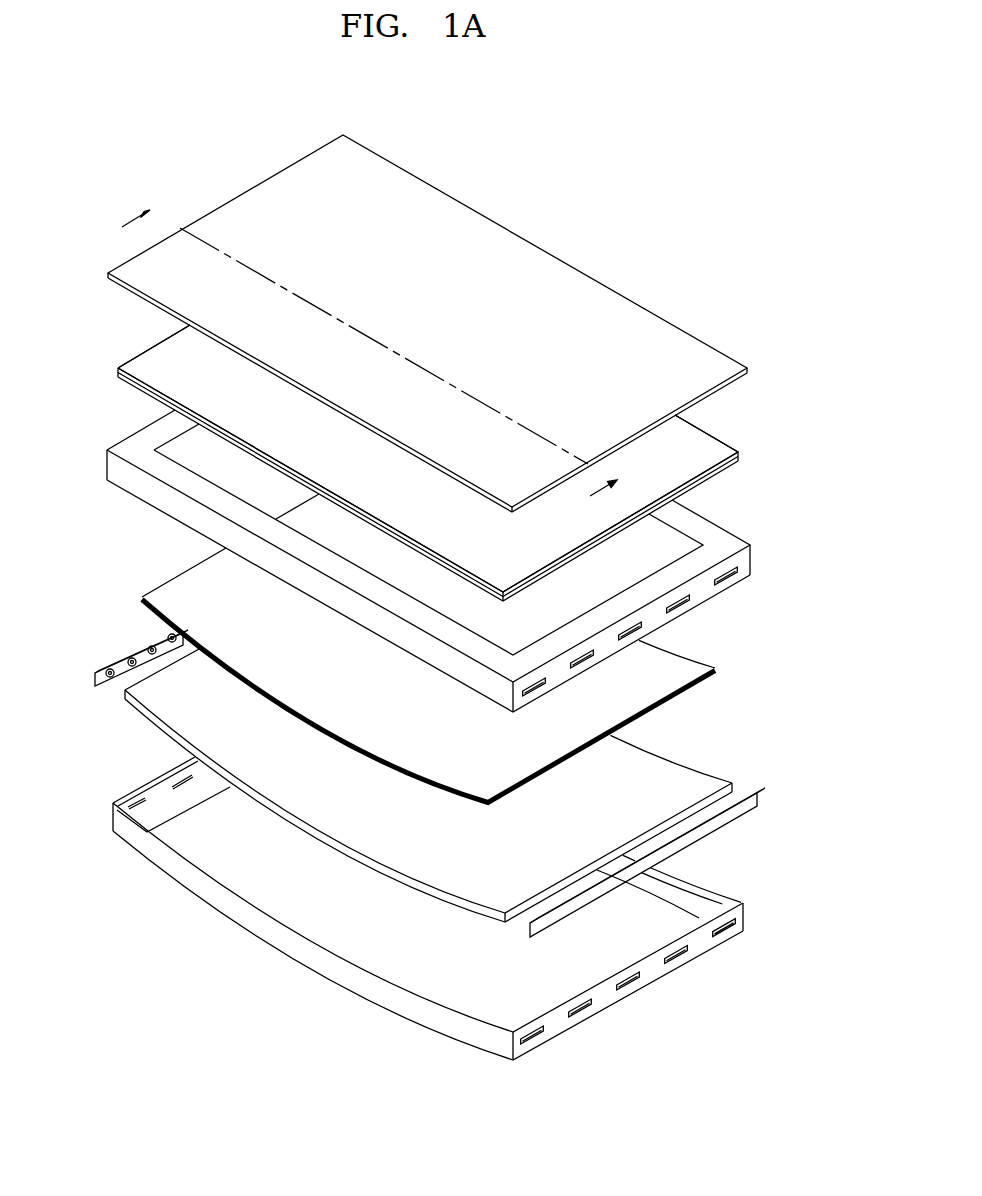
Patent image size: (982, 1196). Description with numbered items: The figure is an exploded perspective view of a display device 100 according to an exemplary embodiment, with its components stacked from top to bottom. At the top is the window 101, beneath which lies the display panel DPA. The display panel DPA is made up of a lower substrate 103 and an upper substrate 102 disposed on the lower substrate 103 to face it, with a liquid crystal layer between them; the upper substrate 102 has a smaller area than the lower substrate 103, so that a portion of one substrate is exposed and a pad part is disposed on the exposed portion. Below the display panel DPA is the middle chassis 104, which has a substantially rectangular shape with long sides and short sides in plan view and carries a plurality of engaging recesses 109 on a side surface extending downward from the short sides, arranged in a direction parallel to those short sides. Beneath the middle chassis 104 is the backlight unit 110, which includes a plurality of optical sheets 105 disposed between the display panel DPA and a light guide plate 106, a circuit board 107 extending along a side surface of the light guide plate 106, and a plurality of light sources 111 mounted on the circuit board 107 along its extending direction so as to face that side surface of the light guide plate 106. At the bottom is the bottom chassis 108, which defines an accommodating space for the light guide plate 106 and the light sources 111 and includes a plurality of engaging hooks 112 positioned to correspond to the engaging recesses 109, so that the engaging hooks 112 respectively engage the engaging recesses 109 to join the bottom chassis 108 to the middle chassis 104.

The display device 100 is at (573, 177).
The window 101 is at (702, 360).
The upper substrate 102 is at (152, 362).
The lower substrate 103 is at (125, 361).
The middle chassis 104 is at (693, 525).
The optical sheets 105 is at (172, 597).
The light guide plate 106 is at (138, 708).
The circuit board 107 is at (145, 640).
The bottom chassis 108 is at (653, 968).
The engaging recesses 109 is at (730, 581).
The backlight unit 110 is at (145, 515).
The light sources 111 is at (120, 662).
The engaging hooks 112 is at (735, 927).
The display panel DPA is at (120, 293).